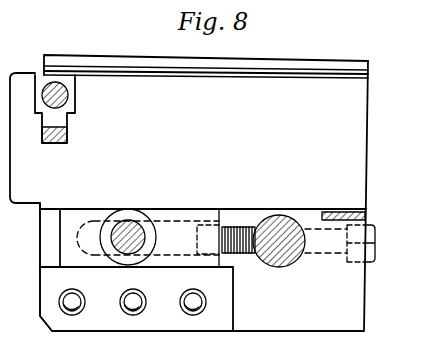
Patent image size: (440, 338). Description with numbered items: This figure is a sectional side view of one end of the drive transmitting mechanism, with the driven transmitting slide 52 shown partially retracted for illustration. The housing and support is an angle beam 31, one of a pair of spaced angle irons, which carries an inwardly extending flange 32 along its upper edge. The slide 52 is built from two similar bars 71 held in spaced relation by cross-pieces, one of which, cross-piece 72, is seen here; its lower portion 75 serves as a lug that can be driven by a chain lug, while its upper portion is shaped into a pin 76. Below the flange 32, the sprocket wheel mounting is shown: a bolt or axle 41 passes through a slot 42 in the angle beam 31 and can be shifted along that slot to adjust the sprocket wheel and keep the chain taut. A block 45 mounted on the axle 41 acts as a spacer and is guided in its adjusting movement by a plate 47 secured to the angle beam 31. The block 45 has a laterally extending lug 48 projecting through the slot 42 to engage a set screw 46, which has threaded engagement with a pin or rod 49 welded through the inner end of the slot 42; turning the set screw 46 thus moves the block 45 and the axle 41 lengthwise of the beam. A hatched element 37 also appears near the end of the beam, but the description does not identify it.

The inwardly extending flange 32 is at (106, 58).
The slide 52 is at (152, 84).
The bar 71 is at (299, 84).
The cross-piece 72 is at (78, 111).
The pin 76 is at (67, 92).
The lower portion of cross-piece 75 is at (50, 143).
The angle beam 31 is at (46, 247).
The block 45 is at (178, 214).
The slot 42 is at (83, 223).
The axle 41 is at (128, 224).
The lug 48 is at (197, 240).
The pin 49 is at (284, 259).
The pad 37 is at (337, 211).
The set screw 46 is at (365, 259).
The plate 47 is at (218, 315).